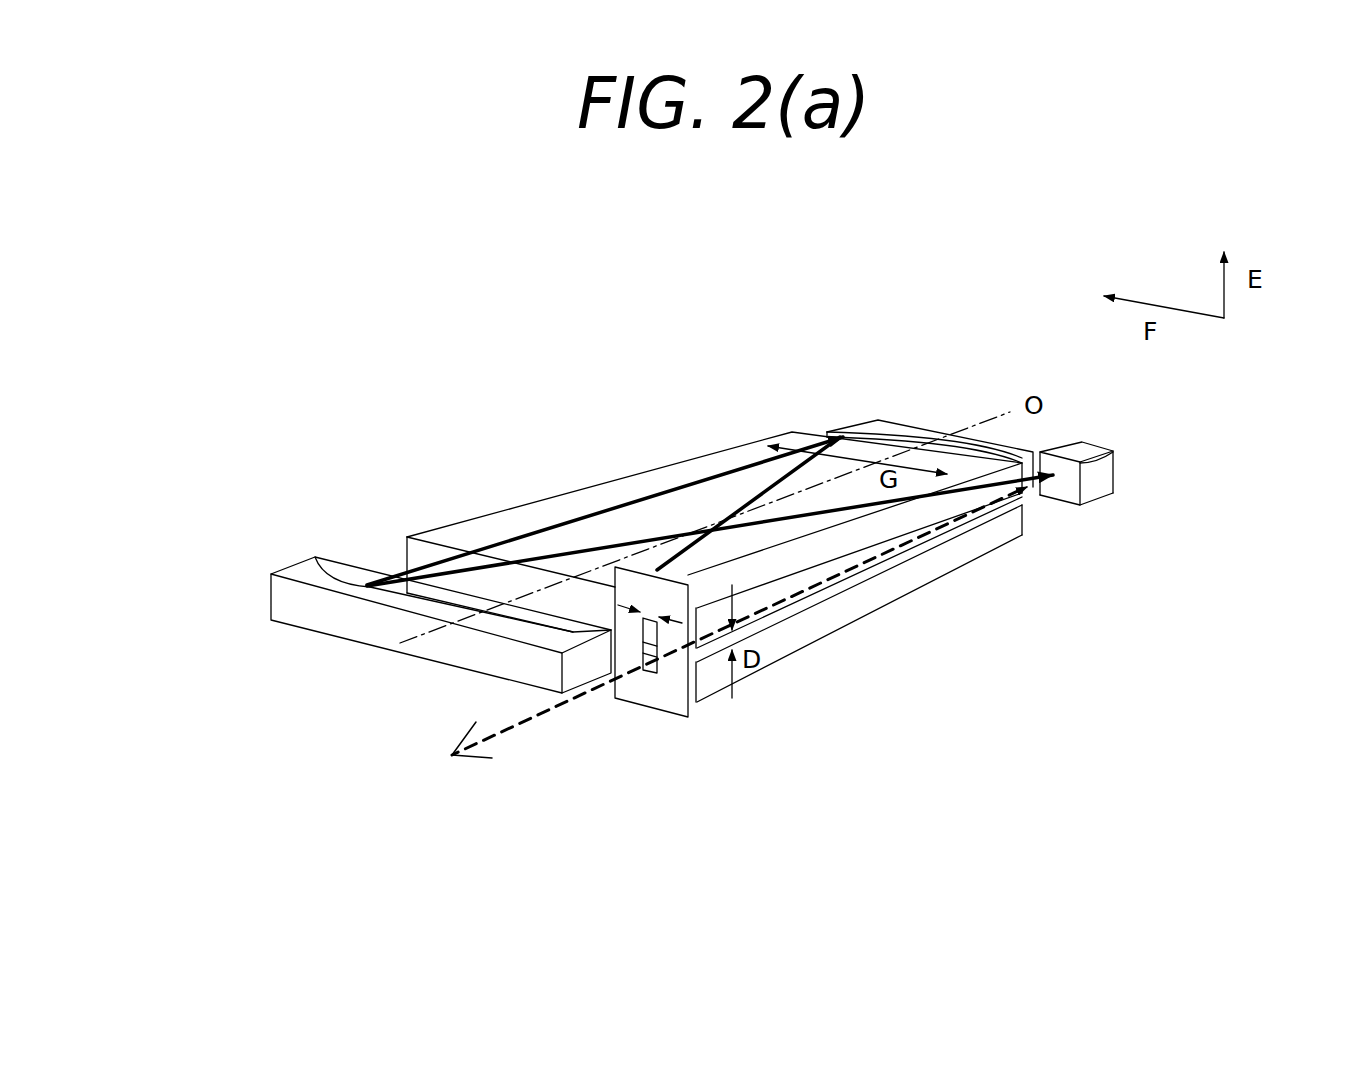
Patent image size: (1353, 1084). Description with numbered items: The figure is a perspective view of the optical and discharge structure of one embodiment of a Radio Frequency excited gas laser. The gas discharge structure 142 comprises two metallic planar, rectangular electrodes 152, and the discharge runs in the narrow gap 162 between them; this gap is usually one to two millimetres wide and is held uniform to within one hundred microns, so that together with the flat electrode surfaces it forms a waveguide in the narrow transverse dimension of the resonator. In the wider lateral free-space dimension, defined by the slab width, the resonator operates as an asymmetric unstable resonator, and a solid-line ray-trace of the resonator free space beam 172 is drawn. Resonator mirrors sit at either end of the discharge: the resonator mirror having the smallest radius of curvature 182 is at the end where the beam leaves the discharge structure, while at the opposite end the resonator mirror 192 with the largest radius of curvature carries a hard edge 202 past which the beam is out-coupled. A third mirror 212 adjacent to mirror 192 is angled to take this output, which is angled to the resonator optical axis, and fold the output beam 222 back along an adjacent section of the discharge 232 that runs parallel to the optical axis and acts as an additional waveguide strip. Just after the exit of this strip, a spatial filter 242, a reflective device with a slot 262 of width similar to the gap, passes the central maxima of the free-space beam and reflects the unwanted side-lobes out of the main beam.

The gas discharge structure 142 is at (586, 446).
The electrodes 152 is at (433, 527).
The gap 162 is at (768, 628).
The resonator free space beam 172 is at (752, 462).
The resonator mirror having the smallest radius of curvature 182 is at (271, 607).
The resonator mirror 192 is at (898, 422).
The hard edge 202 is at (1113, 460).
The third mirror 212 is at (1093, 493).
The output beam 222 is at (462, 768).
The section of the discharge 232 is at (850, 527).
The spatial filter 242 is at (628, 683).
The slot 262 is at (657, 663).